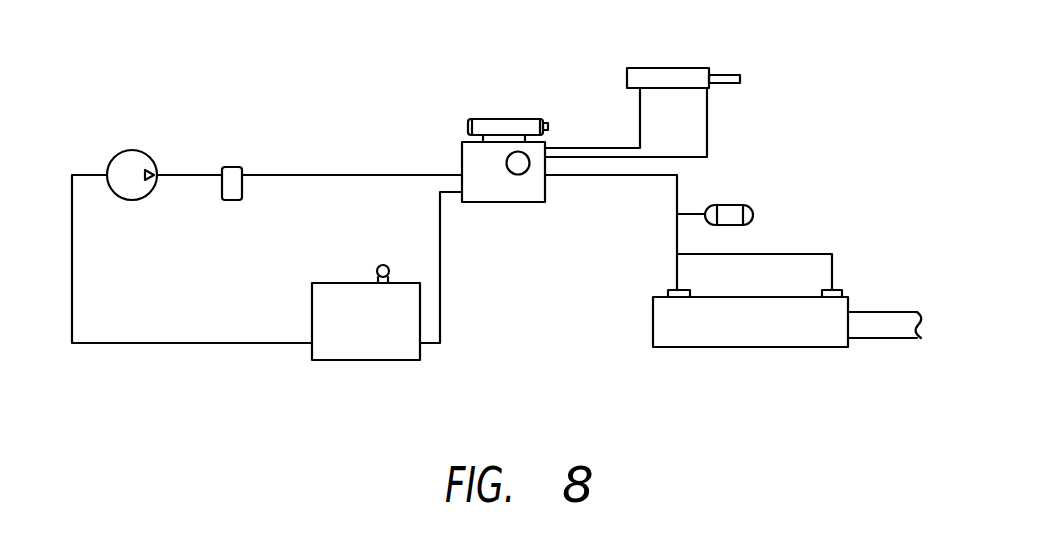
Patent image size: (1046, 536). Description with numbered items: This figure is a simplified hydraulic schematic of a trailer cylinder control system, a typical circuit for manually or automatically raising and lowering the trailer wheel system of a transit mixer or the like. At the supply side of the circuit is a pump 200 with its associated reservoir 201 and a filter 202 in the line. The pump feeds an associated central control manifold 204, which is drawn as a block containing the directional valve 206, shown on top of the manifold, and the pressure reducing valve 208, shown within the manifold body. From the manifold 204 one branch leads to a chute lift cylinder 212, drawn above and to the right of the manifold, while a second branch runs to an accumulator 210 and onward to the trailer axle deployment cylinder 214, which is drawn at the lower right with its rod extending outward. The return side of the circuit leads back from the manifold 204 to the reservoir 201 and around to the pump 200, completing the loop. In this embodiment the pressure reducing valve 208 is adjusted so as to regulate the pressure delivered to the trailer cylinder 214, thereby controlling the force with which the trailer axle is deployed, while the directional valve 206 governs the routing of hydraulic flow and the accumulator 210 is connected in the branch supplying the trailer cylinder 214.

The pump 200 is at (138, 150).
The reservoir 201 is at (395, 362).
The filter 202 is at (232, 162).
The central control manifold 204 is at (502, 197).
The directional valve 206 is at (498, 118).
The pressure reducing valve 208 is at (522, 172).
The accumulator 210 is at (740, 203).
The chute lift cylinder 212 is at (677, 67).
The trailer axle deployment cylinder 214 is at (793, 342).